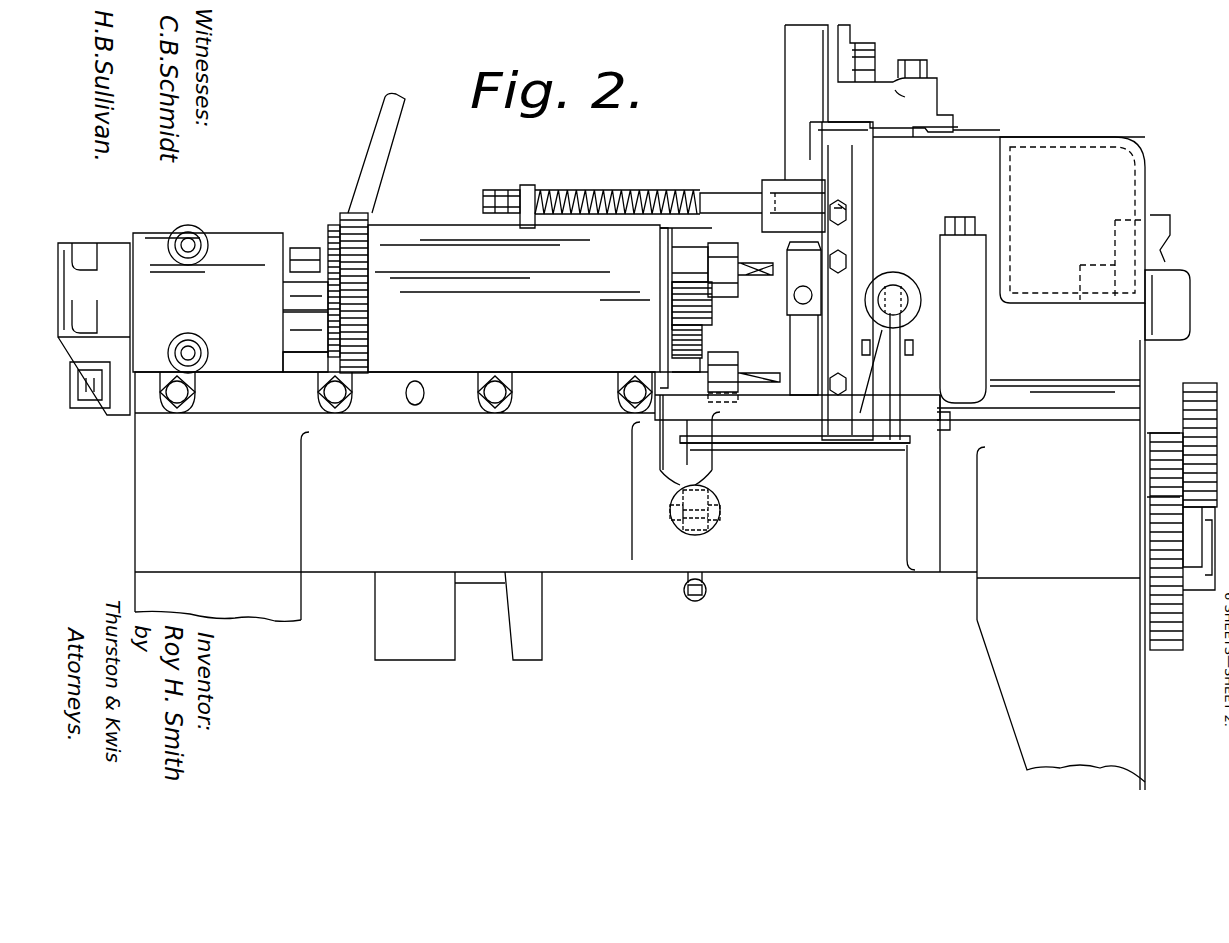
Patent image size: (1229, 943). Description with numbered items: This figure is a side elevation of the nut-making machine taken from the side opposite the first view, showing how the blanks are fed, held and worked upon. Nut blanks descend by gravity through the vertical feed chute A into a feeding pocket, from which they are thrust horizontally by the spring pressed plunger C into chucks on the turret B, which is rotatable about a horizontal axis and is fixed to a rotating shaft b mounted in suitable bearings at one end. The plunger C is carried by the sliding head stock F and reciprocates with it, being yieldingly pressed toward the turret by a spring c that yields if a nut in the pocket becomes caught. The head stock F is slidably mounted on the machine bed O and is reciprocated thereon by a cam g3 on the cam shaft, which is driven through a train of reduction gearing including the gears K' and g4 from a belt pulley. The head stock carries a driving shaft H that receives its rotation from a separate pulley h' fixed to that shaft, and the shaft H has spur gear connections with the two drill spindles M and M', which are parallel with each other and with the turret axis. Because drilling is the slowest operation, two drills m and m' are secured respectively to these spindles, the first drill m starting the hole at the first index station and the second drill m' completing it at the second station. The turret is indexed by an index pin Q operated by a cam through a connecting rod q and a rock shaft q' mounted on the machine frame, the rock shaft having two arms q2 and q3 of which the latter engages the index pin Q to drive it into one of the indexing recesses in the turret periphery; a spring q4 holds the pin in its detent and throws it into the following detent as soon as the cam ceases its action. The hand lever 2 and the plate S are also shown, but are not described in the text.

The hand lever 2 is at (372, 188).
The vertical feed chute A is at (795, 82).
The turret B is at (845, 177).
The spring pressed plunger C is at (748, 192).
The spring c is at (591, 196).
The drill spindle M is at (686, 275).
The drill m is at (740, 265).
The drill spindle M' is at (709, 347).
The drill m' is at (720, 374).
The stop plate S is at (804, 318).
The index pin Q is at (895, 290).
The driving shaft H is at (300, 294).
The pulley h' is at (306, 347).
The sliding head stock F is at (518, 306).
The machine bed O is at (537, 492).
The arm q2 is at (880, 372).
The arm q3 is at (700, 460).
The rock shaft q' is at (795, 459).
The connecting rod q is at (711, 510).
The spring q4 is at (708, 590).
The cam g3 is at (458, 616).
The rotating shaft b is at (1185, 287).
The reduction gear K' is at (1184, 541).
The reduction gear g4 is at (1187, 529).